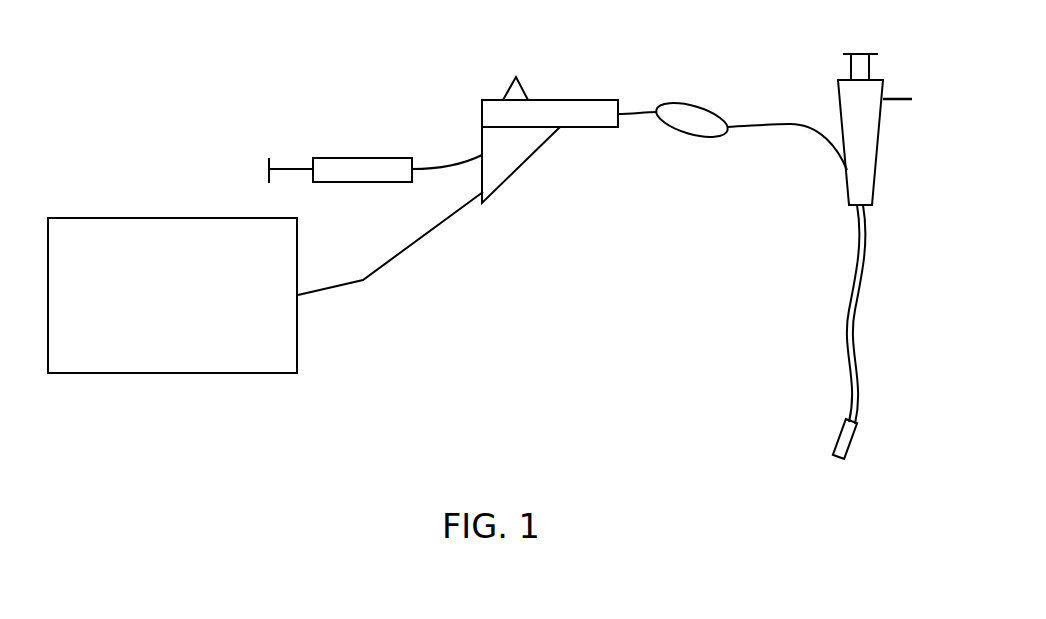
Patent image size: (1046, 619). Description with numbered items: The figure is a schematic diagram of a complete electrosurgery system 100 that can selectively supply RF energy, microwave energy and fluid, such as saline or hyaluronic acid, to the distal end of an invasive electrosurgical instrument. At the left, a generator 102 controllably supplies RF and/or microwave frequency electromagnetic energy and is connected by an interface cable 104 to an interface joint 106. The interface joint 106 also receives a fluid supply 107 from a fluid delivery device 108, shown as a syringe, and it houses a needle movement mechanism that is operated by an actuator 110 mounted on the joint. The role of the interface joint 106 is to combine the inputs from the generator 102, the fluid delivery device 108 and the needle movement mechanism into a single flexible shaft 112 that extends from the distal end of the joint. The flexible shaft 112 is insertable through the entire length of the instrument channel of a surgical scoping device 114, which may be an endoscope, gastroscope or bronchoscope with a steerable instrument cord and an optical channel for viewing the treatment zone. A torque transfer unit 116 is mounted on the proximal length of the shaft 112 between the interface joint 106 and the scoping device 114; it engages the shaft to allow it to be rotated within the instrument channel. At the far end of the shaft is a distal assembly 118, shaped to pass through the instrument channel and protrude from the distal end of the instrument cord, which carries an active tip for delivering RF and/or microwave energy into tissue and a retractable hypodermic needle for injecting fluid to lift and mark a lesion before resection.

The electrosurgery system 100 is at (203, 101).
The generator 102 is at (198, 308).
The interface cable 104 is at (407, 248).
The interface joint 106 is at (533, 150).
The fluid supply 107 is at (452, 162).
The fluid delivery device 108 is at (350, 157).
The actuator 110 is at (523, 95).
The flexible shaft 112 is at (633, 110).
The surgical scoping device 114 is at (877, 163).
The torque transfer unit 116 is at (690, 132).
The distal assembly 118 is at (850, 447).